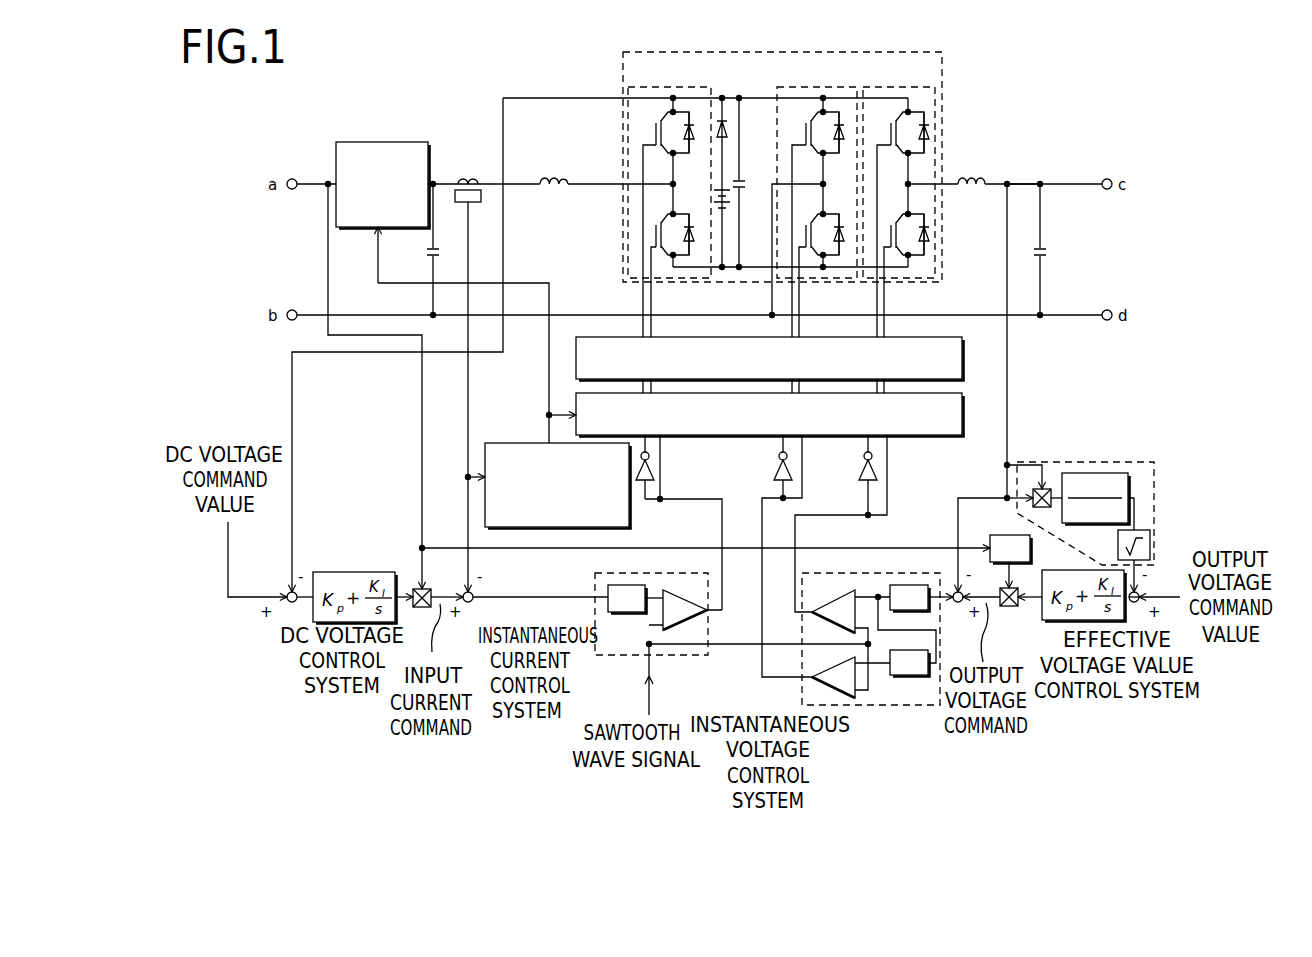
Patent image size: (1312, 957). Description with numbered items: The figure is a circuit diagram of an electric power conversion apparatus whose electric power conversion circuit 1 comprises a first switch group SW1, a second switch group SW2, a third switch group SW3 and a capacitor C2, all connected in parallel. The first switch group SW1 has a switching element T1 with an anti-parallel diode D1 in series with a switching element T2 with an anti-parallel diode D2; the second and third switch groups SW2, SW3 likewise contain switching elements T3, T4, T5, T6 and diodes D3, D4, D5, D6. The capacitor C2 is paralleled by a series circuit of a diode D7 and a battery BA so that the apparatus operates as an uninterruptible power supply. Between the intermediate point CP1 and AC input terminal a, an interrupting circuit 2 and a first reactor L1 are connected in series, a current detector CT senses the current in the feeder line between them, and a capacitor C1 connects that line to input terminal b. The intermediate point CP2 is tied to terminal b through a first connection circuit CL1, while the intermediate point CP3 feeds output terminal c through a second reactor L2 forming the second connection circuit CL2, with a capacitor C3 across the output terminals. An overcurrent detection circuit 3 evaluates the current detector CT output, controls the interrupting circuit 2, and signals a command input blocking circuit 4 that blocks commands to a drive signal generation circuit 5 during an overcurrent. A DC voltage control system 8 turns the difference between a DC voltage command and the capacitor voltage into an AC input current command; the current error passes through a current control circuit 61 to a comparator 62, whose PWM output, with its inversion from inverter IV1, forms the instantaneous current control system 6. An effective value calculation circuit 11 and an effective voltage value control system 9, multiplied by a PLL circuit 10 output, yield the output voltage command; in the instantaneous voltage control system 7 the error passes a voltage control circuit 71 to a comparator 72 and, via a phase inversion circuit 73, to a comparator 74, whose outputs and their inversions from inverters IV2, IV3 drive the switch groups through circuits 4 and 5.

The electric power conversion circuit 1 is at (783, 174).
The interrupting circuit 2 is at (363, 142).
The overcurrent detection circuit 3 is at (519, 443).
The command input blocking circuit 4 is at (963, 405).
The drive signal generation circuit 5 is at (963, 346).
The instantaneous current control system 6 is at (731, 644).
The instantaneous voltage control system 7 is at (872, 664).
The DC voltage control system 8 is at (355, 572).
The effective voltage value control system 9 is at (1065, 570).
The PLL circuit 10 is at (990, 540).
The effective value calculation circuit 11 is at (1154, 497).
The current control circuit 61 is at (625, 613).
The comparator 62 is at (689, 631).
The voltage control circuit 71 is at (930, 610).
The comparator 72 is at (827, 620).
The phase inversion circuit 73 is at (905, 675).
The comparator 74 is at (827, 670).
The first switch group SW1 is at (669, 203).
The second switch group SW2 is at (817, 203).
The third switch group SW3 is at (902, 203).
The switching element T1 is at (663, 217).
The switching element T2 is at (671, 245).
The switching element T3 is at (814, 217).
The switching element T4 is at (821, 245).
The switching element T5 is at (899, 217).
The switching element T6 is at (906, 245).
The diode D1 is at (692, 144).
The diode D2 is at (694, 225).
The diode D3 is at (842, 144).
The diode D4 is at (846, 225).
The diode D5 is at (927, 144).
The diode D6 is at (931, 225).
The diode D7 is at (724, 119).
The battery BA is at (728, 206).
The capacitor C1 is at (418, 249).
The capacitor C2 is at (749, 182).
The capacitor C3 is at (1052, 249).
The first reactor L1 is at (554, 171).
The second reactor L2 is at (971, 171).
The current detector CT is at (467, 178).
The first connection circuit CL1 is at (770, 301).
The second connection circuit CL2 is at (1025, 181).
The intermediate point CP1 is at (672, 183).
The intermediate point CP2 is at (821, 182).
The intermediate point CP3 is at (910, 185).
The inverter IV1 is at (679, 522).
The inverter IV2 is at (778, 556).
The inverter IV3 is at (841, 523).